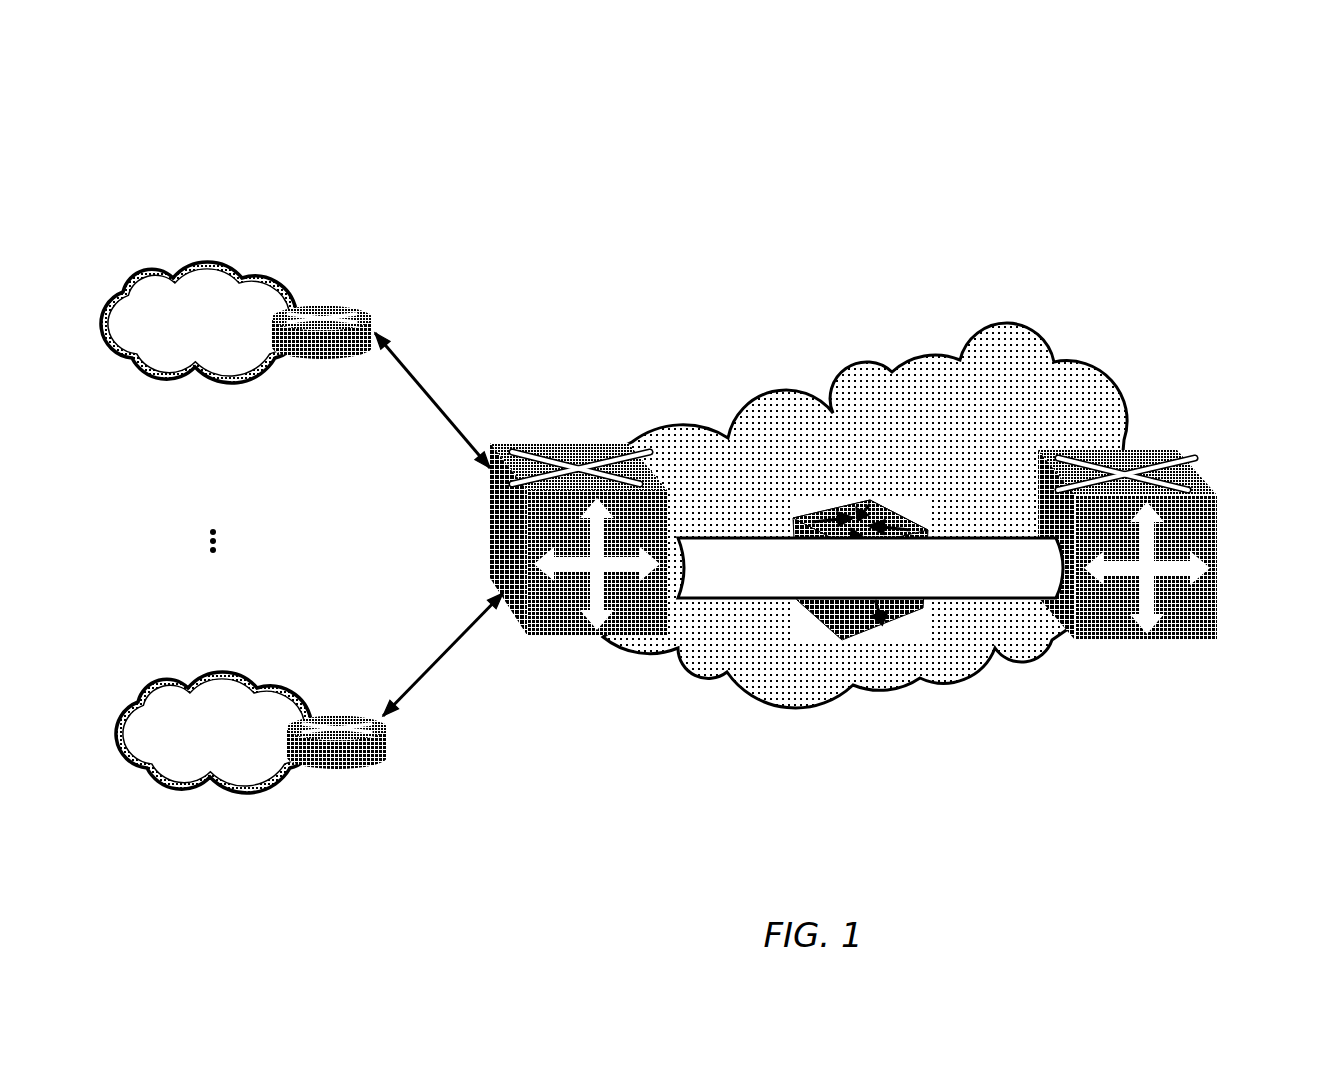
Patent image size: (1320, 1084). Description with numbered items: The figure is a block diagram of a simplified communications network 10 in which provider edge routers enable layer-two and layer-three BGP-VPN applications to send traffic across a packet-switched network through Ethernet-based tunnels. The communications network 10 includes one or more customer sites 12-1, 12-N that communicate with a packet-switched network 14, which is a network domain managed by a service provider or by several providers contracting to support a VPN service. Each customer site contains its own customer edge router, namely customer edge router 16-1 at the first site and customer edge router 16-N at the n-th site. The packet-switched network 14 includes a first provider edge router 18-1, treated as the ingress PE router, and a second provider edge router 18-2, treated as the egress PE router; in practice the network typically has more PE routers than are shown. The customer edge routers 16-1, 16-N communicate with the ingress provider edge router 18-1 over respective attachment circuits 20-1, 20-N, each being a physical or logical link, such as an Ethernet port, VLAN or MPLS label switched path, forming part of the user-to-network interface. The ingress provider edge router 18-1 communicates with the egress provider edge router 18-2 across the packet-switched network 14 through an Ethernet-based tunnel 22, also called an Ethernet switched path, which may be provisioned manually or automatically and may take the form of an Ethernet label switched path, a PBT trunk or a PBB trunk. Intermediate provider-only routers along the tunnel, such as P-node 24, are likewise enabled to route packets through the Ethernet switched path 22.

The communications network 10 is at (1225, 158).
The customer site 12-1 is at (200, 322).
The customer site 12-N is at (215, 732).
The packet-switched network 14 is at (1006, 330).
The customer edge router 16-1 is at (335, 311).
The customer edge router 16-N is at (338, 722).
The ingress provider edge router 18-1 is at (562, 446).
The egress provider edge router 18-2 is at (1188, 471).
The attachment circuit 20-1 is at (440, 408).
The attachment circuit 20-N is at (440, 652).
The Ethernet-based tunnel 22 is at (870, 568).
The P-node 24 is at (869, 505).